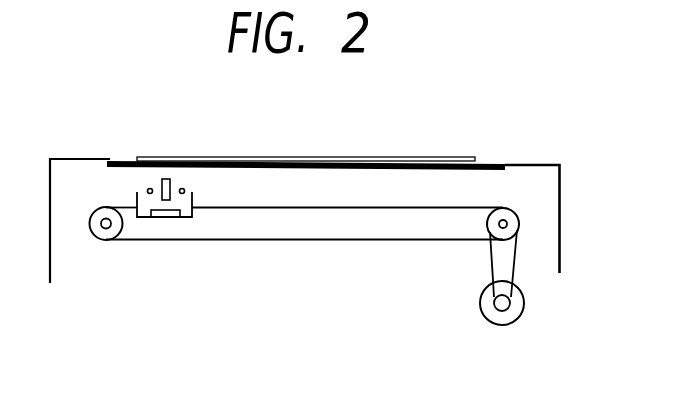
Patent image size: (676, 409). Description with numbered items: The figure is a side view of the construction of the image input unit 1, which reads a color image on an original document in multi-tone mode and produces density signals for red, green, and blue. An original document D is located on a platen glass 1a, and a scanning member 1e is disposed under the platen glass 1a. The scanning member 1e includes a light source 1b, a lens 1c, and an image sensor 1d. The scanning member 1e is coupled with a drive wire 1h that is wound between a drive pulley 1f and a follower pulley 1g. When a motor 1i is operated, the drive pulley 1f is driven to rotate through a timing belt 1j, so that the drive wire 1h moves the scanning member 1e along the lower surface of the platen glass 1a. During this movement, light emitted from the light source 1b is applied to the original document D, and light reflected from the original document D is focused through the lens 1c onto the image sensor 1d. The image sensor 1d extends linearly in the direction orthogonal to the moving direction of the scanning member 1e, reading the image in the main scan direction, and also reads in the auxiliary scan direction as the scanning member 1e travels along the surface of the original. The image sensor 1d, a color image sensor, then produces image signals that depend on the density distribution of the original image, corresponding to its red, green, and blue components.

The image input unit 1 is at (572, 219).
The platen glass 1a is at (378, 169).
The light source 1b is at (147, 188).
The lens 1c is at (165, 178).
The image sensor 1d is at (174, 218).
The scanning member 1e is at (160, 230).
The drive pulley 1f is at (517, 213).
The follower pulley 1g is at (103, 239).
The drive wire 1h is at (345, 242).
The motor 1i is at (522, 308).
The timing belt 1j is at (514, 264).
The original document D is at (438, 156).